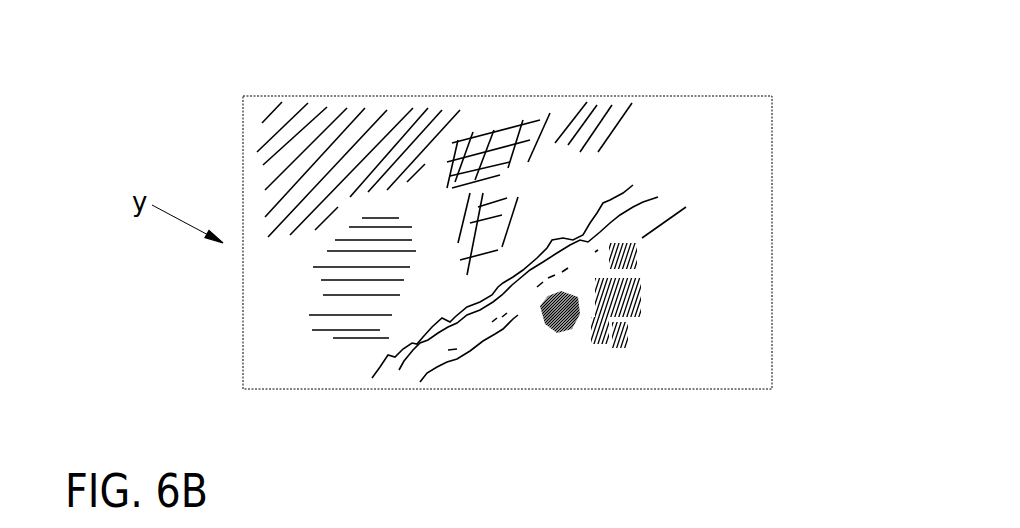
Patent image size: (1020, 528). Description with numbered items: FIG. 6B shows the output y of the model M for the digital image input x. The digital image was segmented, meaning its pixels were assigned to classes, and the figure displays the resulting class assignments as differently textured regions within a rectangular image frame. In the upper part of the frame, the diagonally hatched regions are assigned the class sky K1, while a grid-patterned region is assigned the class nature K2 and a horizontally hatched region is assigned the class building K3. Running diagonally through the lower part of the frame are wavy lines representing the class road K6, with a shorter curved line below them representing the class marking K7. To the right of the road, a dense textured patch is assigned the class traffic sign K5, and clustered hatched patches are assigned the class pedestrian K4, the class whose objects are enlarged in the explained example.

The sky K1 is at (292, 122).
The nature K2 is at (500, 148).
The building K3 is at (373, 251).
The pedestrian K4 is at (627, 280).
The traffic sign K5 is at (562, 327).
The road K6 is at (658, 218).
The marking K7 is at (440, 354).